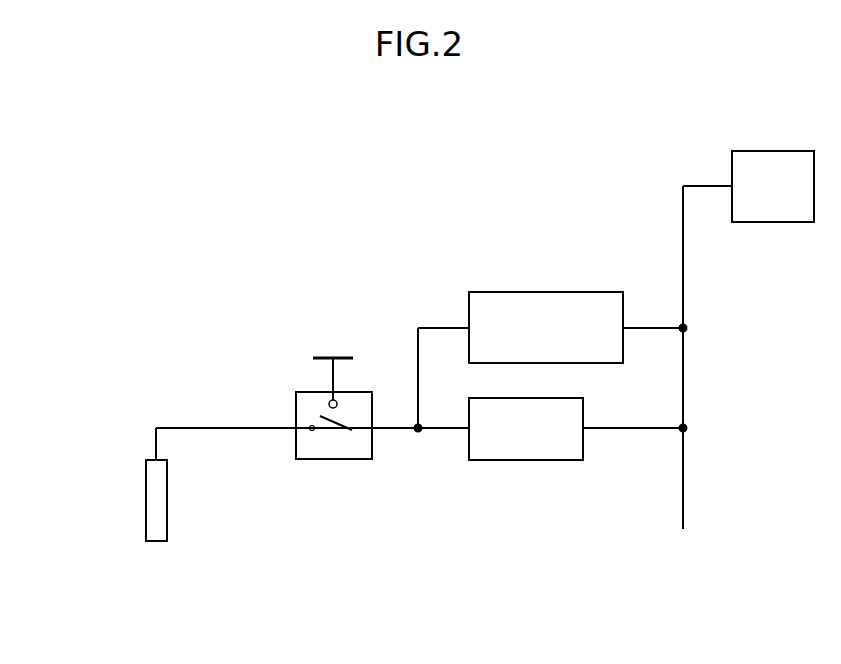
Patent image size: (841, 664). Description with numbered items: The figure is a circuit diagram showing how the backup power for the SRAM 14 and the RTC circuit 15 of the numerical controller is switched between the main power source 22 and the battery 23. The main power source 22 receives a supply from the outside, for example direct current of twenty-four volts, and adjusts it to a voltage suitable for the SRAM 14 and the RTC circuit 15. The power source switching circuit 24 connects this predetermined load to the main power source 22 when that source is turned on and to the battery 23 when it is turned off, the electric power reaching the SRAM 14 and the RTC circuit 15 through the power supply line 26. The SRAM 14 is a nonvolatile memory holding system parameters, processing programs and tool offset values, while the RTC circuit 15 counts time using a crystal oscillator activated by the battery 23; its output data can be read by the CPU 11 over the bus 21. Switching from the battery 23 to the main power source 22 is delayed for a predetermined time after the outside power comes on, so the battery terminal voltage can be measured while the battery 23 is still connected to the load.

The processor (CPU) 11 is at (773, 224).
The SRAM 14 is at (542, 292).
The RTC circuit 15 is at (527, 462).
The bus 21 is at (687, 182).
The main power source 22 is at (340, 355).
The battery 23 is at (160, 543).
The power source switching circuit 24 is at (335, 462).
The power supply line 26 is at (434, 324).